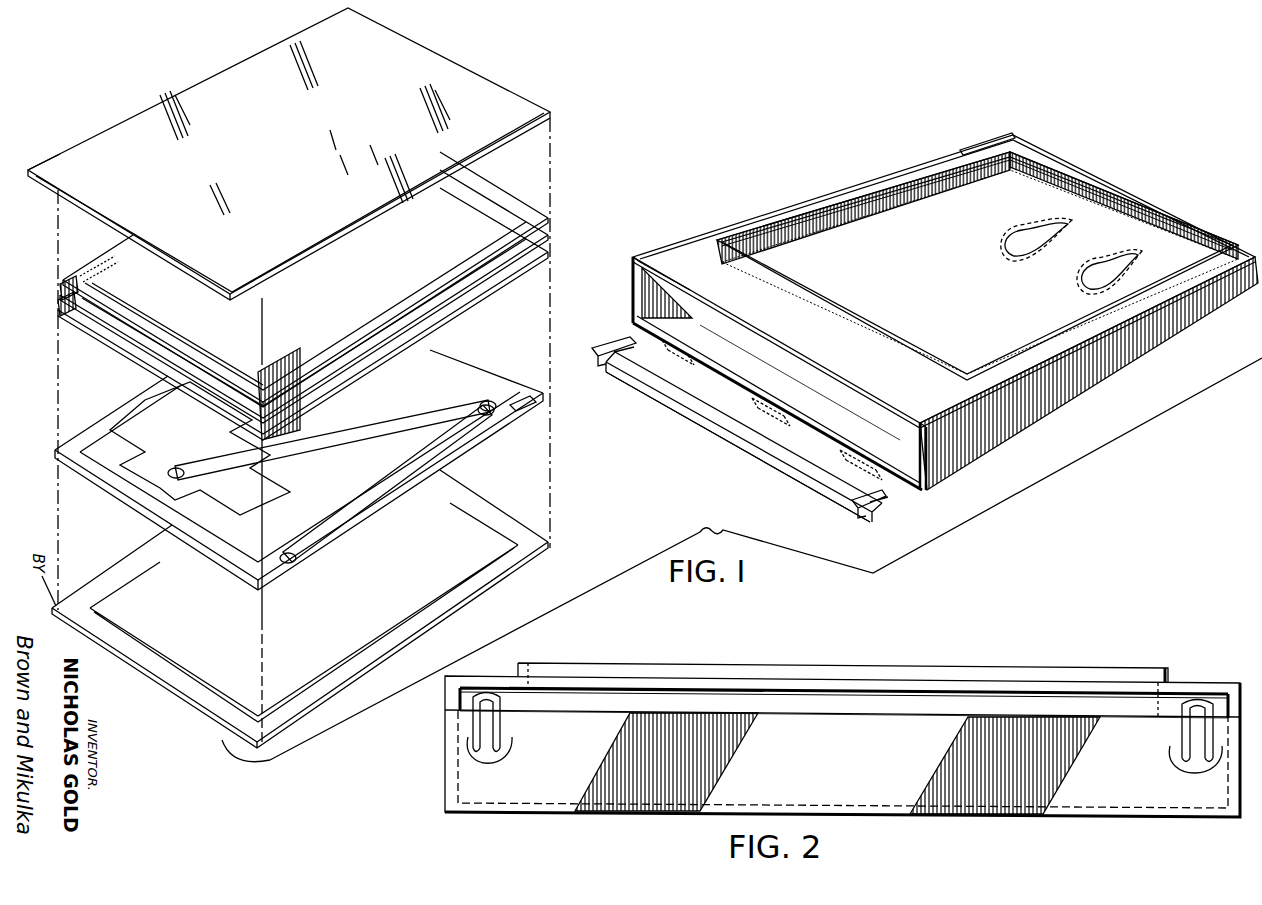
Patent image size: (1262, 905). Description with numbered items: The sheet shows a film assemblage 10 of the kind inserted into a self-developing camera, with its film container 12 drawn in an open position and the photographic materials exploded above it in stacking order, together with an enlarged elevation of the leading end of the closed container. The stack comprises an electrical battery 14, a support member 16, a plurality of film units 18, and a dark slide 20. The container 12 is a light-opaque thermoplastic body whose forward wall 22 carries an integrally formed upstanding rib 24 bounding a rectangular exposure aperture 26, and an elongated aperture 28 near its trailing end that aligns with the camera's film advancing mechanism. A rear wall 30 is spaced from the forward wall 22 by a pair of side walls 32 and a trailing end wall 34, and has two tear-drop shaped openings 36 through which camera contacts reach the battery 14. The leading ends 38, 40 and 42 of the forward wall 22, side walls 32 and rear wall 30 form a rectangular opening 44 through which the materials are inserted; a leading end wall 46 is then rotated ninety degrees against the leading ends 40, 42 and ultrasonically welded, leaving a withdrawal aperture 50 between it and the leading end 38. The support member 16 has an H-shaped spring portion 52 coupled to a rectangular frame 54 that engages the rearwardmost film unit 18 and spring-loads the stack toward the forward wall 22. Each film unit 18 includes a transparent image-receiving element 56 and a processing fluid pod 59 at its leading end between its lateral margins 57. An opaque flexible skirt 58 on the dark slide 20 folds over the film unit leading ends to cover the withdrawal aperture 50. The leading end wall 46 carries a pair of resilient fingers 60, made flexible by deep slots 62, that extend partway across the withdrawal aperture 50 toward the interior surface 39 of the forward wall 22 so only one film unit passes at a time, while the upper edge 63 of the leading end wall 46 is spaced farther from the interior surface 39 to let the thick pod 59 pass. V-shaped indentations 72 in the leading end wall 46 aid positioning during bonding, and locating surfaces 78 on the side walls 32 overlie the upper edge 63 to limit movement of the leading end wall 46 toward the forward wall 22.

In FIG. 1, the film assemblage 10 is at (602, 120).
In FIG. 1, the film container 12 is at (830, 174).
In FIG. 1, the electrical battery 14 is at (500, 596).
In FIG. 1, the support member 16 is at (500, 449).
In FIG. 1, the film units 18 is at (516, 286).
In FIG. 1, the dark slide 20 is at (521, 146).
In FIG. 1, the forward wall 22 is at (703, 248).
In FIG. 1, the upstanding rib 24 is at (748, 240).
In FIG. 2, the upstanding rib 24 is at (585, 663).
In FIG. 1, the exposure aperture 26 is at (810, 260).
In FIG. 1, the elongated aperture 28 is at (972, 147).
In FIG. 1, the rear wall 30 is at (960, 259).
In FIG. 1, the side walls 32 is at (852, 225).
In FIG. 1, the trailing end wall 34 is at (1055, 183).
In FIG. 1, the tear-drop shaped openings 36 is at (1108, 272).
In FIG. 1, the leading end of forward wall 38 is at (757, 330).
In FIG. 2, the leading end of forward wall 38 is at (666, 683).
In FIG. 1, the interior surface of forward wall 39 is at (732, 314).
In FIG. 2, the interior surface of forward wall 39 is at (936, 700).
In FIG. 1, the leading ends of side walls 40 is at (633, 293).
In FIG. 1, the leading end of rear wall 42 is at (690, 340).
In FIG. 1, the rectangular opening 44 is at (795, 370).
In FIG. 1, the leading end wall 46 is at (712, 406).
In FIG. 2, the leading end wall 46 is at (548, 783).
In FIG. 2, the withdrawal aperture 50 is at (722, 698).
In FIG. 1, the H-shaped spring portion 52 is at (380, 410).
In FIG. 1, the rectangular frame 54 is at (400, 490).
In FIG. 1, the image-receiving element 56 is at (442, 250).
In FIG. 1, the lateral margins 57 is at (62, 272).
In FIG. 1, the opaque flexible skirt 58 is at (58, 172).
In FIG. 1, the pod 59 is at (102, 262).
In FIG. 1, the fingers 60 is at (608, 358).
In FIG. 2, the fingers 60 is at (500, 704).
In FIG. 2, the slots 62 is at (844, 759).
In FIG. 1, the upper edge of leading end wall 63 is at (792, 473).
In FIG. 2, the upper edge of leading end wall 63 is at (880, 708).
In FIG. 1, the V-shaped indentations 72 is at (668, 352).
In FIG. 1, the locating surfaces 78 is at (633, 262).